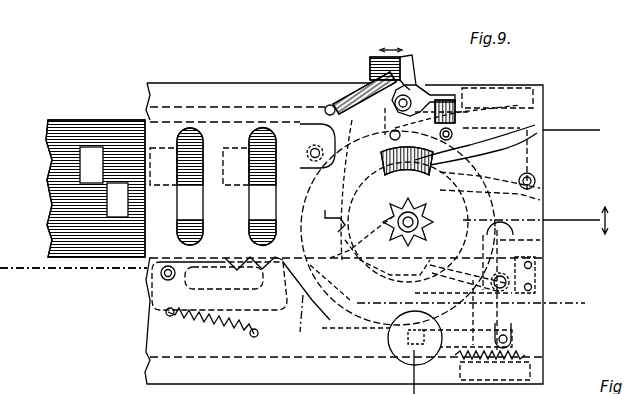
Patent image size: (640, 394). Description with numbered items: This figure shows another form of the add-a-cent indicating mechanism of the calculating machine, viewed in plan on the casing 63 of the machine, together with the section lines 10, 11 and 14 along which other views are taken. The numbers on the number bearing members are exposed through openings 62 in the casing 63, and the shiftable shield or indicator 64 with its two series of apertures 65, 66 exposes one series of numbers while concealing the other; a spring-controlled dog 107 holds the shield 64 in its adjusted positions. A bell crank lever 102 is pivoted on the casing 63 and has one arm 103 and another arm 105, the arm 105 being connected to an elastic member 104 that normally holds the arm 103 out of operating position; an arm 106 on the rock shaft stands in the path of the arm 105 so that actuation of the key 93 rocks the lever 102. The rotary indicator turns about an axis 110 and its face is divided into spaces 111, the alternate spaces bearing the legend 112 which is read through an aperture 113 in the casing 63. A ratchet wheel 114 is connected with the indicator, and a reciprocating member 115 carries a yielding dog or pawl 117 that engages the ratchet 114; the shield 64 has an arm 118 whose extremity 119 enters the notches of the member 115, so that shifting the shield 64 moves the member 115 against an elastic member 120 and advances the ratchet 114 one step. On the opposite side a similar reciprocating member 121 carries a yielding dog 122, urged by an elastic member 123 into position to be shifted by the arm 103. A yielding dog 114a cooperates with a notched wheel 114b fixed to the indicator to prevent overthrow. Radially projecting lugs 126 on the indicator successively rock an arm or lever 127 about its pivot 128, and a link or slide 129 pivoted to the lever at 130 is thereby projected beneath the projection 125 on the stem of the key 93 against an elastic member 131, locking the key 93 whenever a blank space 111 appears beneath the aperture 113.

The section line 10— 10 is at (618, 222).
The section line 11— 11 is at (304, 268).
The section line 14— 14 is at (393, 41).
The openings 62 is at (190, 135).
The casing 63 is at (150, 352).
The shiftable shield or indicator 64 is at (60, 205).
The apertures or openings 65 is at (88, 150).
The apertures or openings 66 is at (115, 215).
The key 93 is at (400, 348).
The bell crank lever 102 is at (368, 78).
The arm 103 is at (425, 88).
The elastic member 104 is at (326, 108).
The arm 105 is at (412, 62).
The arm 106 is at (375, 57).
The spring-controlled dog 107 is at (205, 296).
The axis 110 is at (404, 234).
The spaces 111 is at (348, 212).
The legend 112 is at (395, 275).
The aperture 113 is at (452, 124).
The ratchet wheel 114 is at (350, 241).
The yielding dog 114a is at (571, 139).
The notched wheel 114b is at (476, 145).
The reciprocating member 115 is at (505, 300).
The yielding dog or pawl 117 is at (490, 203).
The arm 118 is at (296, 324).
The extremity 119 is at (336, 297).
The elastic member 120 is at (531, 290).
The reciprocating member 121 is at (458, 95).
The yielding dog 122 is at (339, 143).
The elastic member 123 is at (497, 139).
The projection 125 is at (467, 357).
The radially projecting lugs or fingers 126 is at (312, 246).
The arm or lever 127 is at (571, 210).
The pivot 128 is at (537, 280).
The link or slide 129 is at (463, 312).
The pivotal connection 130 is at (512, 342).
The elastic member 131 is at (495, 373).